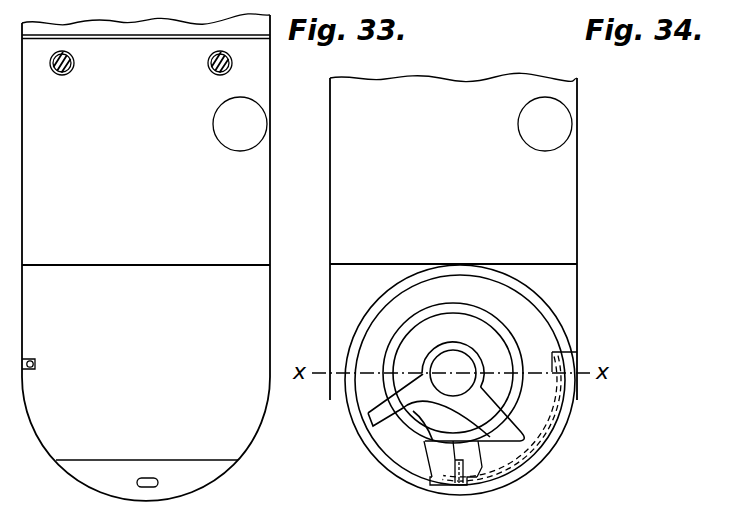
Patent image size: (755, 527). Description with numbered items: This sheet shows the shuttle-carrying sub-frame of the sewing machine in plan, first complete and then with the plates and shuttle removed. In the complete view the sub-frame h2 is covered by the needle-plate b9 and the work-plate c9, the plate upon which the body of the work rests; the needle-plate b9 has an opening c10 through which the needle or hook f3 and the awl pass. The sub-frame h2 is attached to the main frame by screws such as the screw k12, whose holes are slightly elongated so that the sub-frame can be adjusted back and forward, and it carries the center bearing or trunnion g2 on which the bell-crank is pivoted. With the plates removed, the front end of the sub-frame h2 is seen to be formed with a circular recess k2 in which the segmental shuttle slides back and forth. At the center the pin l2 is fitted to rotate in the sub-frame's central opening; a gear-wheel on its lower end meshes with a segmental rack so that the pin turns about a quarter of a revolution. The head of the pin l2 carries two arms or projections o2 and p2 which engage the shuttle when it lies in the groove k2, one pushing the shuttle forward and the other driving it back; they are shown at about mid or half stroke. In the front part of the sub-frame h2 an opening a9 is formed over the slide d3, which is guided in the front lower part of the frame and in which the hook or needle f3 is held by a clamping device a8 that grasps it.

In FIG. 33, the sub-frame h2 is at (146, 140).
In FIG. 34, the sub-frame h2 is at (453, 239).
In FIG. 33, the work-plate c9 is at (146, 383).
In FIG. 33, the needle-plate b9 is at (100, 482).
In FIG. 33, the opening c10 is at (150, 488).
In FIG. 33, the screw k12 is at (68, 72).
In FIG. 33, the center bearing or trunnion g2 is at (240, 124).
In FIG. 34, the center bearing or trunnion g2 is at (545, 124).
In FIG. 34, the opening a9 is at (470, 455).
In FIG. 34, the circular recess k2 is at (440, 373).
In FIG. 34, the pin l2 is at (452, 358).
In FIG. 34, the arm or projection o2 is at (429, 407).
In FIG. 34, the arm or projection p2 is at (501, 416).
In FIG. 34, the slide d3 is at (440, 448).
In FIG. 34, the clamping device a8 is at (445, 470).
In FIG. 34, the hook or needle f3 is at (455, 483).